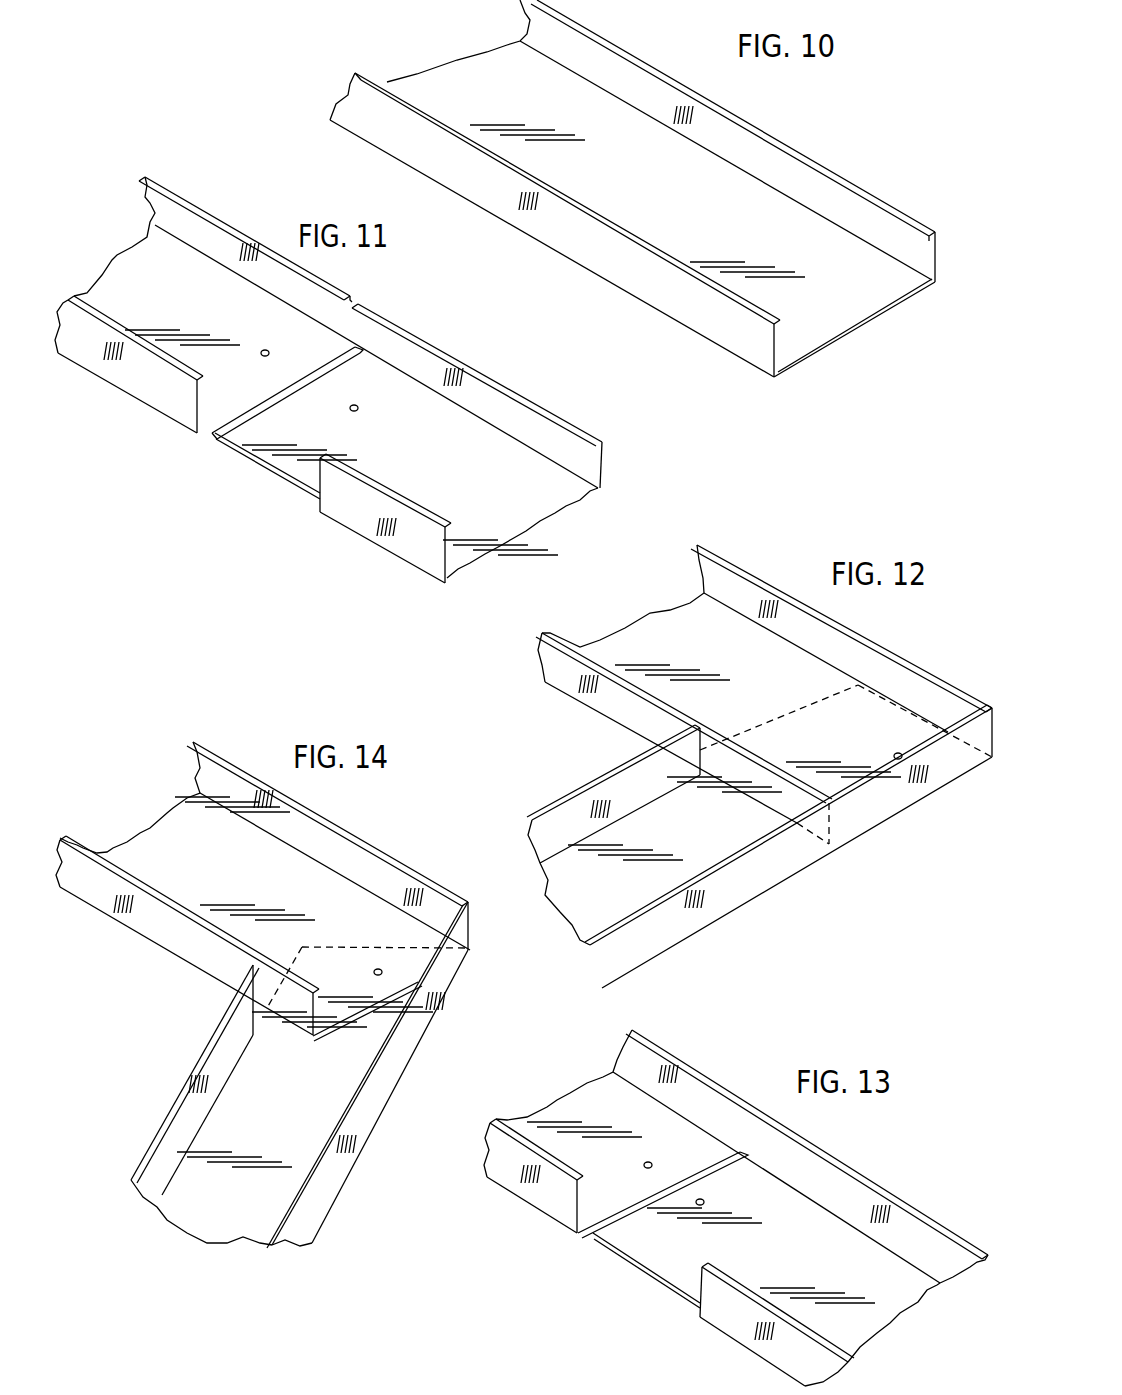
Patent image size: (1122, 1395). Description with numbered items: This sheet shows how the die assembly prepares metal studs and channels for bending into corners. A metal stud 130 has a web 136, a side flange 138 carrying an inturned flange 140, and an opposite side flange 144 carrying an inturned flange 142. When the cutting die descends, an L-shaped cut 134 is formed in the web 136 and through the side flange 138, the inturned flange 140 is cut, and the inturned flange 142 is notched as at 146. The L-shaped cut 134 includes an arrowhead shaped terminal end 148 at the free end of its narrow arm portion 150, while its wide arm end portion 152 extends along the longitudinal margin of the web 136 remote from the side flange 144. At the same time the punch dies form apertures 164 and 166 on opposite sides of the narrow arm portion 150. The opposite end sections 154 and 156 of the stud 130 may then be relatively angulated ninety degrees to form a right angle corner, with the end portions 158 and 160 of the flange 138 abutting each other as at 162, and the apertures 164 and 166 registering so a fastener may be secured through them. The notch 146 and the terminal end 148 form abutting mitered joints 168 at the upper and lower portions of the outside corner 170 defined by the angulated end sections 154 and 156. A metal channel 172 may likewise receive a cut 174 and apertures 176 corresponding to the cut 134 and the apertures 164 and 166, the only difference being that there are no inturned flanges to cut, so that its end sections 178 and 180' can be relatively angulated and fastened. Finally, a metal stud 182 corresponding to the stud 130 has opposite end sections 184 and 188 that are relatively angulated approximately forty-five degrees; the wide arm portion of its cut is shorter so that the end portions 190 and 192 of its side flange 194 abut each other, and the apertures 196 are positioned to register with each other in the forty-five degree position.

In FIG. 10, the metal stud 130 is at (810, 158).
In FIG. 11, the metal stud 130 is at (557, 420).
In FIG. 11, the L-shaped cut 134 is at (252, 462).
In FIG. 10, the web 136 is at (744, 231).
In FIG. 11, the web 136 is at (496, 503).
In FIG. 10, the side flange 138 is at (407, 133).
In FIG. 11, the side flange 138 is at (167, 407).
In FIG. 10, the inturned flange 140 is at (372, 70).
In FIG. 11, the inturned flange 140 is at (165, 352).
In FIG. 10, the inturned flange 142 is at (897, 213).
In FIG. 11, the inturned flange 142 is at (483, 373).
In FIG. 10, the side flange 144 is at (938, 260).
In FIG. 11, the side flange 144 is at (598, 467).
In FIG. 11, the notch 146 is at (358, 302).
In FIG. 11, the arrowhead shaped terminal end 148 is at (350, 347).
In FIG. 11, the narrow arm portion 150 is at (273, 390).
In FIG. 11, the wide arm end portion 152 is at (302, 492).
In FIG. 11, the end section 154 is at (420, 563).
In FIG. 12, the end section 154 is at (725, 902).
In FIG. 11, the end section 156 is at (165, 176).
In FIG. 12, the end section 156 is at (747, 566).
In FIG. 11, the end portion of flange 158 is at (363, 527).
In FIG. 11, the end portion of flange 160 is at (85, 358).
In FIG. 12, the abutment 162 is at (702, 752).
In FIG. 11, the aperture 164 is at (357, 409).
In FIG. 11, the aperture 166 is at (262, 358).
In FIG. 12, the aperture 166 is at (895, 753).
In FIG. 12, the mitered joint 168 is at (987, 705).
In FIG. 12, the outside corner 170 is at (996, 775).
In FIG. 13, the metal channel 172 is at (880, 1187).
In FIG. 13, the cut 174 is at (642, 1268).
In FIG. 13, the apertures 176 is at (647, 1161).
In FIG. 13, the end section 178 is at (757, 1347).
In FIG. 13, the end section 180' is at (526, 1189).
In FIG. 14, the metal stud 182 is at (427, 878).
In FIG. 14, the end section 184 is at (358, 1142).
In FIG. 14, the end section 188 is at (153, 935).
In FIG. 14, the end portion of side flange 190 is at (223, 1050).
In FIG. 14, the end portion of side flange 192 is at (205, 960).
In FIG. 14, the side flange 194 is at (107, 910).
In FIG. 14, the apertures 196 is at (377, 966).